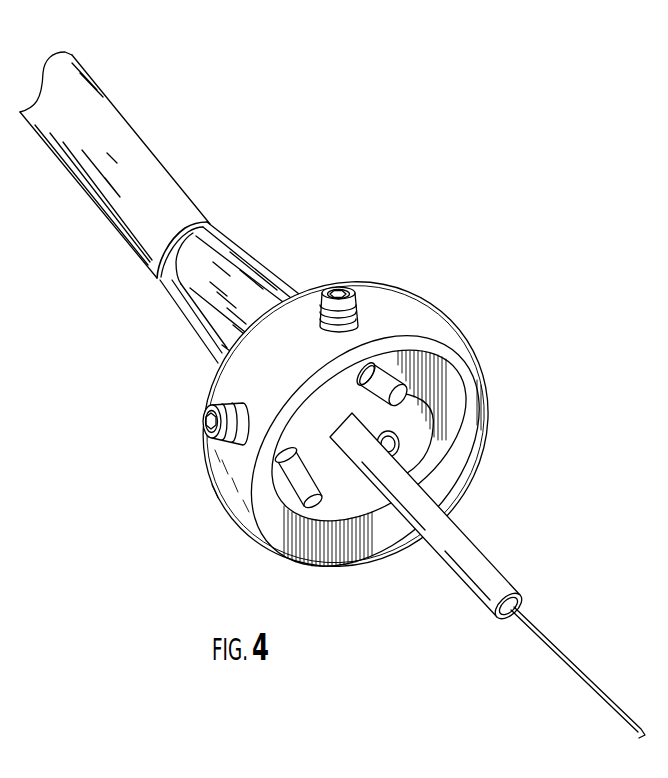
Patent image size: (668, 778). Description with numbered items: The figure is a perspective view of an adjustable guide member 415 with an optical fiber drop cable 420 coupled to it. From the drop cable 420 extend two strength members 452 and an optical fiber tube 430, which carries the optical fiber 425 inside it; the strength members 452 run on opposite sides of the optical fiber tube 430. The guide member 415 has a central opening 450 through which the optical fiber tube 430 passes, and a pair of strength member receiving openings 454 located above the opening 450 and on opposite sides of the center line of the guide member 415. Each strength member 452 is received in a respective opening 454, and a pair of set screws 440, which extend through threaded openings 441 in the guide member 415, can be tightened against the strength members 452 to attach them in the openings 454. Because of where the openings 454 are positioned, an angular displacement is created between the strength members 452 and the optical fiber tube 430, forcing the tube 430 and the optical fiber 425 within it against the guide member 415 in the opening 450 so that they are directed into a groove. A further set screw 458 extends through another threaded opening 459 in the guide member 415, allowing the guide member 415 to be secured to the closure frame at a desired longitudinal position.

The adjustable guide member 415 is at (356, 424).
The optical fiber drop cable 420 is at (153, 150).
The optical fiber 425 is at (553, 643).
The optical fiber tube 430 is at (346, 382).
The set screws 440 is at (288, 375).
The threaded openings 441 is at (357, 315).
The opening 450 is at (437, 503).
The strength members 452 is at (263, 273).
The strength member receiving openings 454 is at (375, 368).
The set screw 458 is at (398, 452).
The threaded opening 459 is at (413, 433).